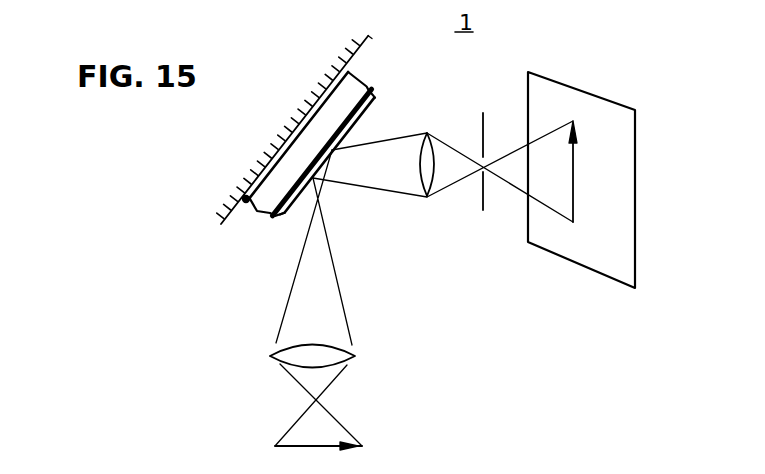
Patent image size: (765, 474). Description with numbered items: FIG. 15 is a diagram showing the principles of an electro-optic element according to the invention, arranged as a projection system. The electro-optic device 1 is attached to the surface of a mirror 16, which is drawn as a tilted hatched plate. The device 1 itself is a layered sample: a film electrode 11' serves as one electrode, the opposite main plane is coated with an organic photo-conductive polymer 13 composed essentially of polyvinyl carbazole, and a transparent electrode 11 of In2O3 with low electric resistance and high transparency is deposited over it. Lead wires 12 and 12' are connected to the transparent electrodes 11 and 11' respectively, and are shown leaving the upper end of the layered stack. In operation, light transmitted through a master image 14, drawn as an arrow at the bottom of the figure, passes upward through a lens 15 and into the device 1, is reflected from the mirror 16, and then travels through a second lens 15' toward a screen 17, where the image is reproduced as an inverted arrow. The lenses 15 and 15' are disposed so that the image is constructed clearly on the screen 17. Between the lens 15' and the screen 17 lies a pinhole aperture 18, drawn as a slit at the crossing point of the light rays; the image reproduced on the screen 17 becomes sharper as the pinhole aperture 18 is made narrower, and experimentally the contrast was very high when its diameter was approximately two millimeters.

The device 1 is at (256, 212).
The transparent electrode 11 is at (297, 234).
The film electrode 11' is at (242, 226).
The lead wire 12 is at (368, 150).
The lead wire 12' is at (347, 118).
The organic photo-conductive polymer 13 is at (268, 214).
The master image 14 is at (330, 443).
The lens 15 is at (330, 344).
The lens 15' is at (419, 186).
The mirror 16 is at (372, 34).
The screen 17 is at (572, 261).
The pinhole aperture 18 is at (483, 114).